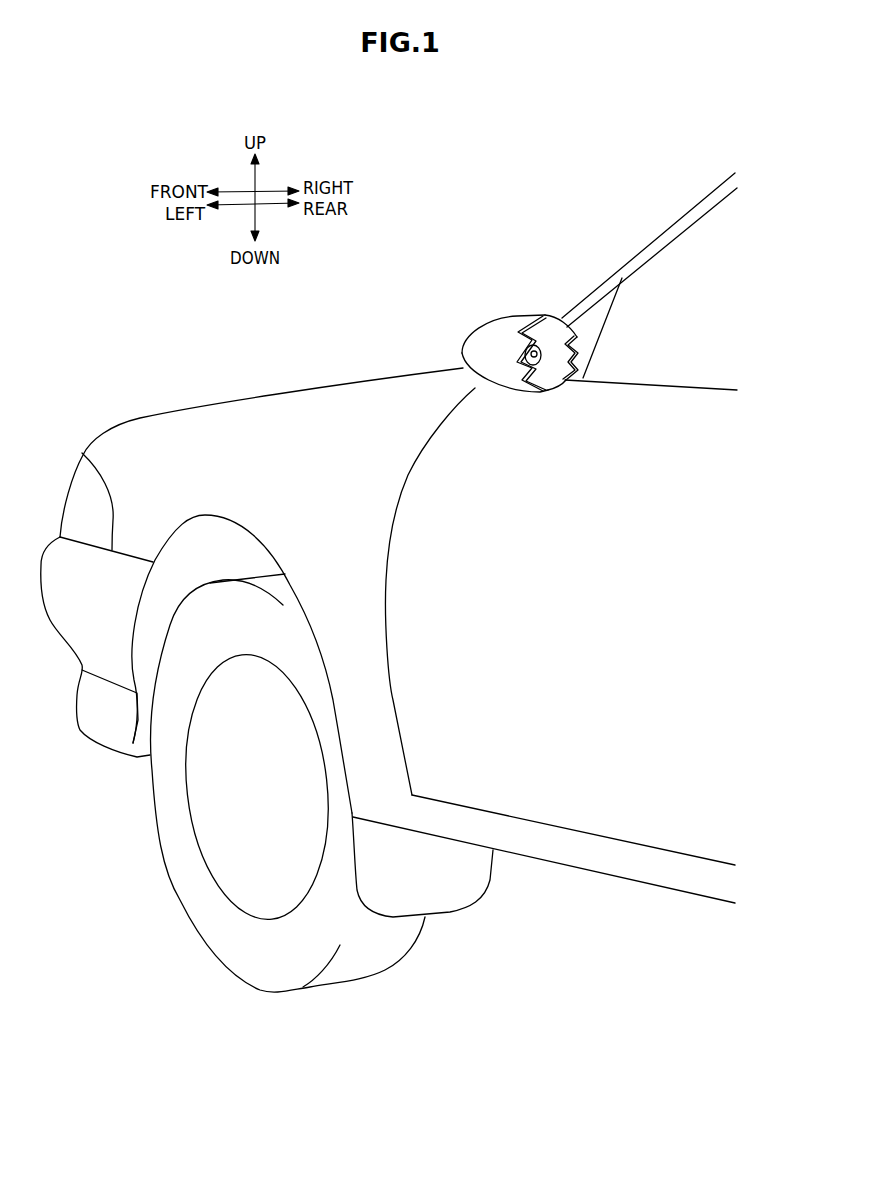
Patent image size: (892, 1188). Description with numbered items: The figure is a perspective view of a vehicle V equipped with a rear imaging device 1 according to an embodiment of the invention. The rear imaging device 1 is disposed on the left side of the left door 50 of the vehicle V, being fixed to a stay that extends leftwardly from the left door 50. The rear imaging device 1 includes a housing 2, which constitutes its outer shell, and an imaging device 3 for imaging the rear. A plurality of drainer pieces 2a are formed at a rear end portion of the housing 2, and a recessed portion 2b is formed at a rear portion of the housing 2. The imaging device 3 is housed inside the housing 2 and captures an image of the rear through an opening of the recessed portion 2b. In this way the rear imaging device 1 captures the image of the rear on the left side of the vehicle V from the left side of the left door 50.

The vehicle V is at (210, 396).
The rear imaging device 1 is at (512, 309).
The housing 2 is at (497, 338).
The drainer pieces 2a is at (535, 322).
The recessed portion 2b is at (551, 365).
The imaging device 3 is at (546, 347).
The left door 50 is at (653, 785).